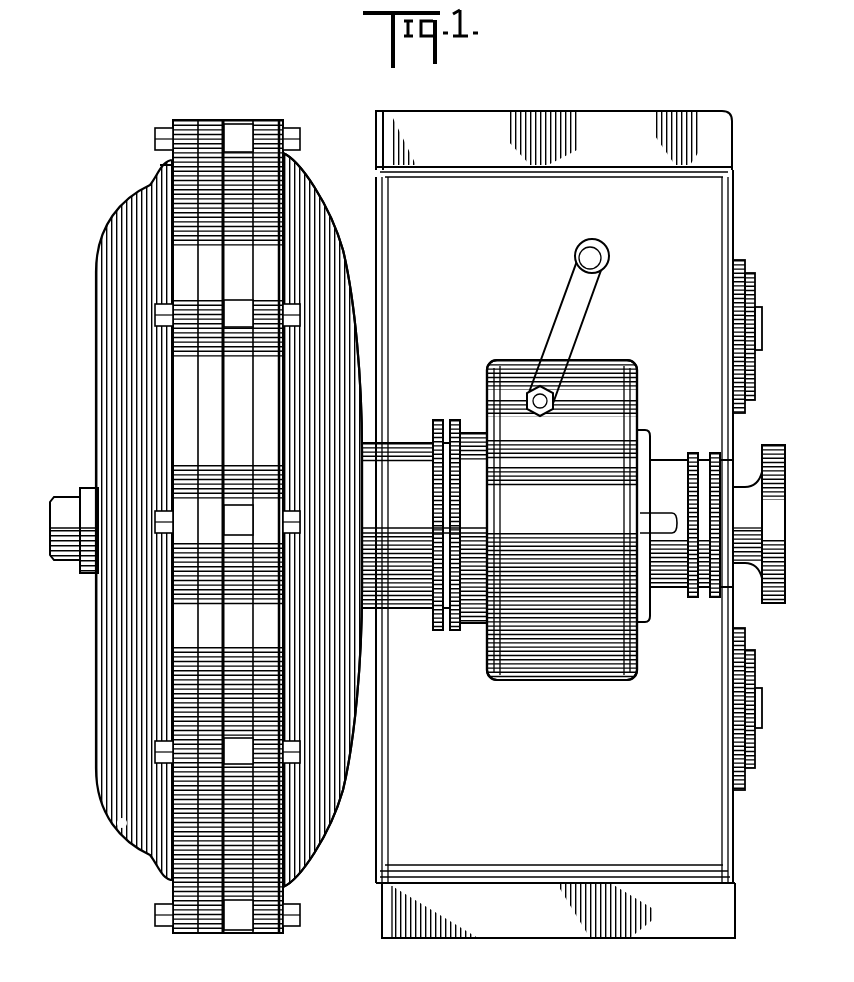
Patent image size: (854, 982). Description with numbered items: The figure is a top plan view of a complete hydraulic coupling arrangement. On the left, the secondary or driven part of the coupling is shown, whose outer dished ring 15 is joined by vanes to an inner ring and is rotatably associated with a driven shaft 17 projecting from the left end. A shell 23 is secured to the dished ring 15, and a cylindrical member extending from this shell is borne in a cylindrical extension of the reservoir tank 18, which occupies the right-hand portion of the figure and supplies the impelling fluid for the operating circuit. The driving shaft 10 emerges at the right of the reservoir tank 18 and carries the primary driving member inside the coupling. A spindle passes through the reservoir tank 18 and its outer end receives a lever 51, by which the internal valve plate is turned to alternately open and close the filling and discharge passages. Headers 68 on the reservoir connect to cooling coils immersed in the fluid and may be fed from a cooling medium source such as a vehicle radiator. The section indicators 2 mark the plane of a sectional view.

The section line 2- 2 is at (38, 513).
The driving shaft 10 is at (745, 483).
The dished ring 15 is at (97, 365).
The driven shaft 17 is at (64, 497).
The reservoir tank 18 is at (582, 543).
The shell 23 is at (334, 240).
The lever 51 is at (573, 318).
The headers 68 is at (755, 383).